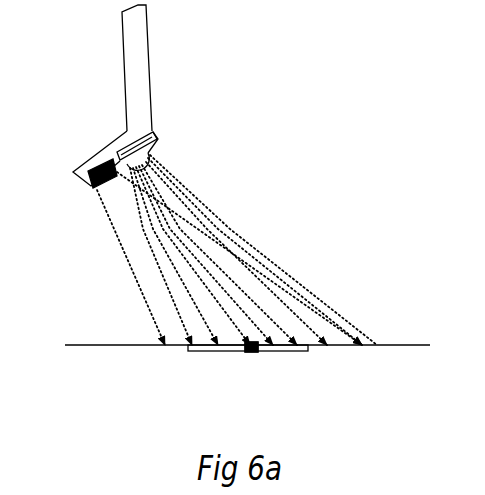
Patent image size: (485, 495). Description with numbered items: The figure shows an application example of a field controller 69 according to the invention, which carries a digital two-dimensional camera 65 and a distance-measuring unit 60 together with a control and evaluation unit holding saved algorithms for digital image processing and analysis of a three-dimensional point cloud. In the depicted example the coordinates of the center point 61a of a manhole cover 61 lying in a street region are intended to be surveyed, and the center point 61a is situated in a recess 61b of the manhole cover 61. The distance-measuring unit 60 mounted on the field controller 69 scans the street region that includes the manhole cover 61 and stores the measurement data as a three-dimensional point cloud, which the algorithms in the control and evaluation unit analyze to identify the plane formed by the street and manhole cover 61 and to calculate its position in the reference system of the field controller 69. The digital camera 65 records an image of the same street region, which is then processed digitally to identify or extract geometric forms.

The field controller 69 is at (135, 62).
The distance-measuring unit 60 is at (164, 142).
The digital 2D camera 65 is at (95, 188).
The manhole cover 61 is at (267, 378).
The center point 61a is at (207, 375).
The recess 61b is at (207, 388).